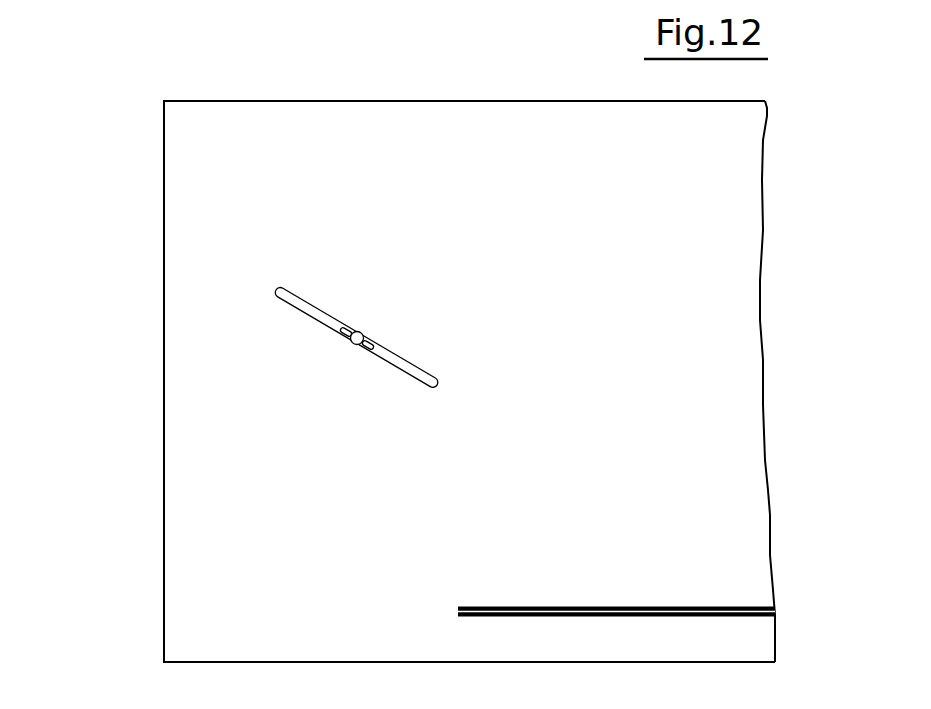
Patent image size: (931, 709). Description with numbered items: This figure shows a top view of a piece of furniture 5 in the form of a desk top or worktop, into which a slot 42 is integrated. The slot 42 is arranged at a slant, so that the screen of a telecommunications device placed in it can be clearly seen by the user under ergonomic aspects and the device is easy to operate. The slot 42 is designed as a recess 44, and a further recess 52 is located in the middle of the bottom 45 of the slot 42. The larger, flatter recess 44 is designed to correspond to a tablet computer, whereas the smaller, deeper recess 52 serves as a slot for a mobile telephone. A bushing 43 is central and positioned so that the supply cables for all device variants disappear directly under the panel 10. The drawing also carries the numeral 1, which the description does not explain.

The piece of furniture 5 is at (518, 128).
The panel 10 is at (742, 404).
The recess 44 is at (235, 469).
The slot 42 is at (235, 469).
The bushing 43 is at (347, 338).
The recess 52 is at (361, 349).
The device 1 is at (398, 370).
The bottom 45 is at (420, 377).